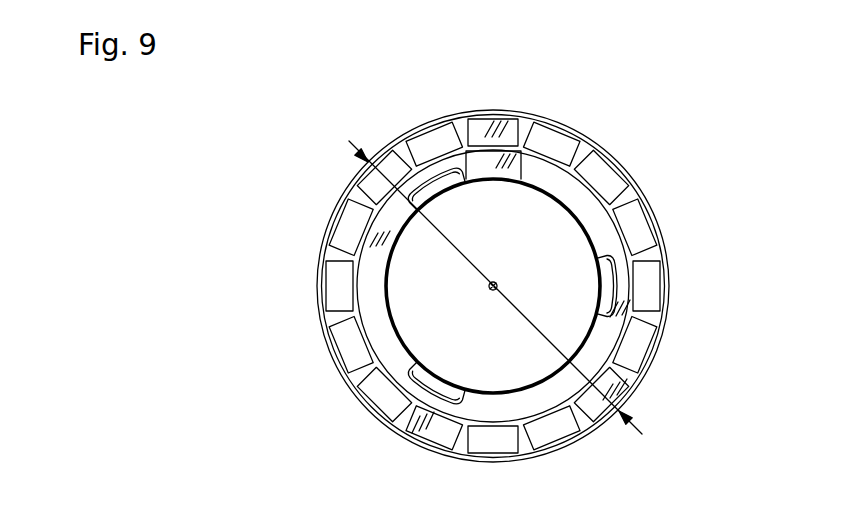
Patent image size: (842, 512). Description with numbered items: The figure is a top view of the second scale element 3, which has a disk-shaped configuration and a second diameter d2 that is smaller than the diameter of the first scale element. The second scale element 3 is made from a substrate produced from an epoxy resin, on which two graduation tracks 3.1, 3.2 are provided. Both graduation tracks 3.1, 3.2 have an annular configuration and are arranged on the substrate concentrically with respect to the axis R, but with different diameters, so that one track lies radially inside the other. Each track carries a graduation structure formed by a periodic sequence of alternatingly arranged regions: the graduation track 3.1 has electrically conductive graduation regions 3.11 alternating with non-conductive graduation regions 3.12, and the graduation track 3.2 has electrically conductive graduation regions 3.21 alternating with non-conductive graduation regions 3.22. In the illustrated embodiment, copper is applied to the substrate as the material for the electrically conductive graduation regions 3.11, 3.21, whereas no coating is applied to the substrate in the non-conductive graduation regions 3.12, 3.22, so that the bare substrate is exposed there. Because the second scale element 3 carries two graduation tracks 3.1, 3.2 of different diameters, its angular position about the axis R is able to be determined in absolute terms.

The second scale element 3 is at (323, 213).
The graduation track 3.1 is at (486, 160).
The electrically conductive graduation region 3.11 is at (575, 184).
The non-conductive graduation region 3.12 is at (603, 257).
The graduation track 3.2 is at (343, 282).
The electrically conductive graduation region 3.21 is at (341, 352).
The non-conductive graduation region 3.22 is at (356, 383).
The second diameter d2 is at (495, 274).
The axis R is at (489, 285).